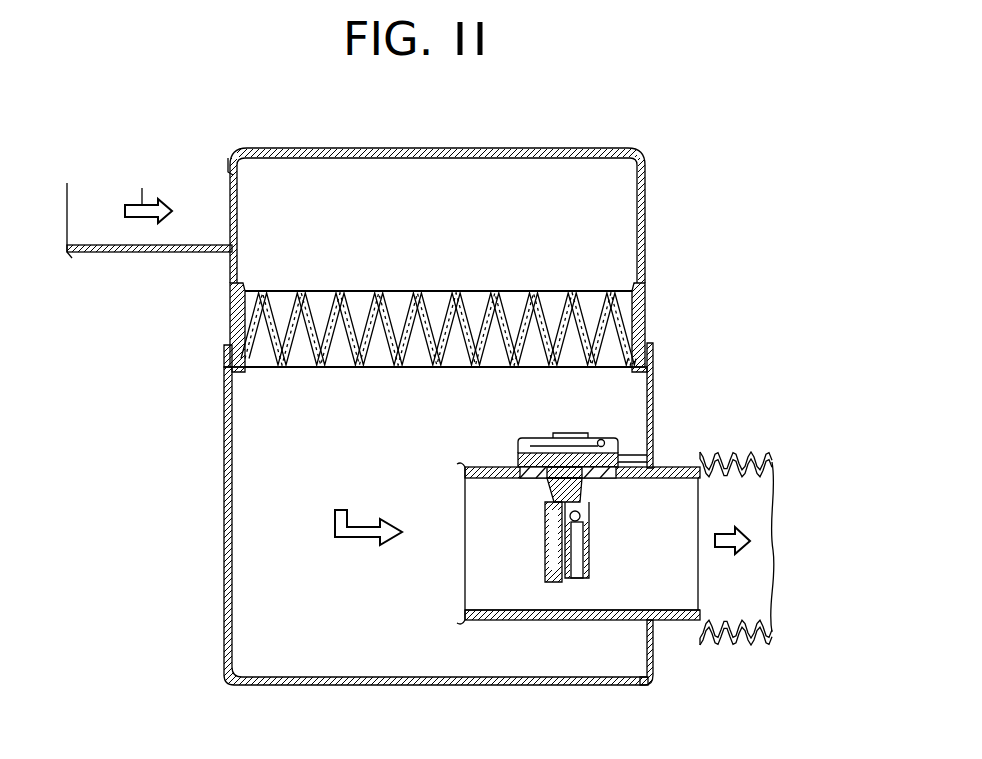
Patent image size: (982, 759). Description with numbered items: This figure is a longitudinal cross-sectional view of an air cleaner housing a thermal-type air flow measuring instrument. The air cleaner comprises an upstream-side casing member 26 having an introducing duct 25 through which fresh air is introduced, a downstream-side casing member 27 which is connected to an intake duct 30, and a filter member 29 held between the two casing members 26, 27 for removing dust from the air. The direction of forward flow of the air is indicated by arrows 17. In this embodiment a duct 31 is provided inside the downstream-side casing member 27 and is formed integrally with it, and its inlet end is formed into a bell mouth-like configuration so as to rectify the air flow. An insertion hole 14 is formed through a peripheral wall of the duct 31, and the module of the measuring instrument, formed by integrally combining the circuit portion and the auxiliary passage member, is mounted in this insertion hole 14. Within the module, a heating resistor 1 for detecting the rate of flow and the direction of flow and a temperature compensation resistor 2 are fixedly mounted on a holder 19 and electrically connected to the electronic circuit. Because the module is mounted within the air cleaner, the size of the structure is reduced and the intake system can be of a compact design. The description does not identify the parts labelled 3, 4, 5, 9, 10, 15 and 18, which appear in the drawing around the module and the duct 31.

The heating resistor 1 is at (547, 512).
The temperature compensation resistor 2 is at (582, 523).
The sleeve 3 is at (580, 552).
The lead 4 is at (588, 570).
The measuring tube 5 is at (480, 575).
The housing wall 9 is at (616, 445).
The circuit module 10 is at (537, 439).
The insertion hole 14 is at (520, 452).
The terminal 15 is at (620, 458).
The arrow 17 is at (148, 178).
The seal ring 18 is at (602, 439).
The holder 19 is at (567, 433).
The introducing duct 25 is at (100, 178).
The upstream-side casing member 26 is at (648, 172).
The downstream-side casing member 27 is at (224, 578).
The filter member 29 is at (365, 290).
The intake duct 30 is at (742, 450).
The duct 31 is at (525, 620).